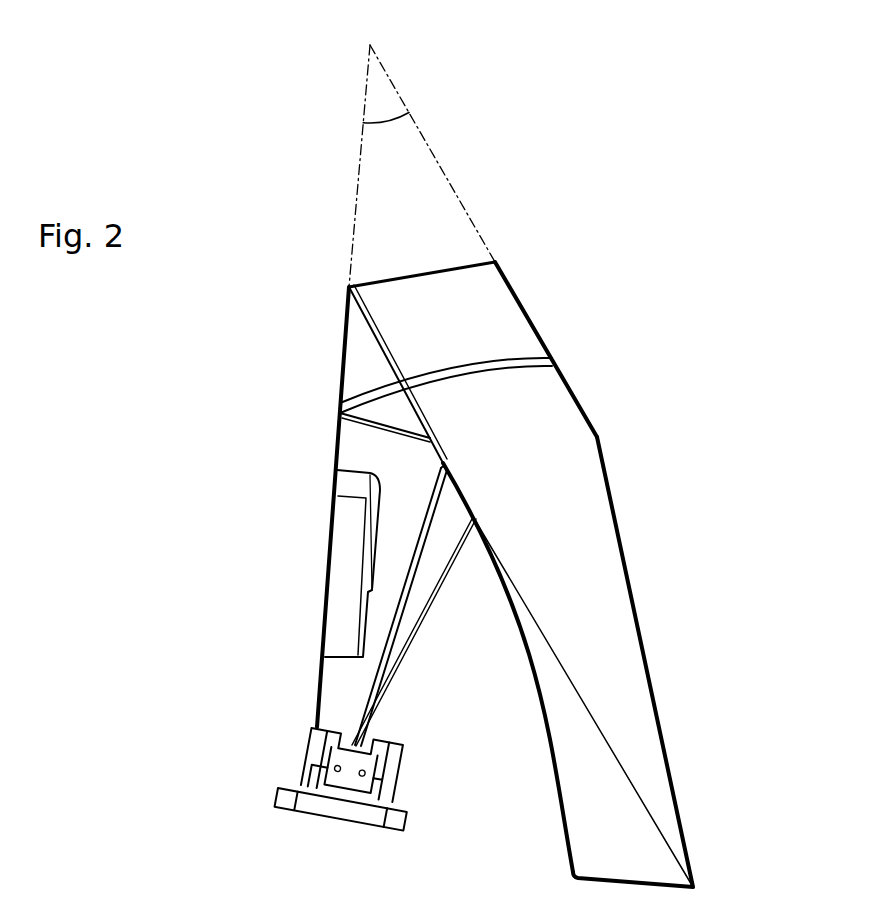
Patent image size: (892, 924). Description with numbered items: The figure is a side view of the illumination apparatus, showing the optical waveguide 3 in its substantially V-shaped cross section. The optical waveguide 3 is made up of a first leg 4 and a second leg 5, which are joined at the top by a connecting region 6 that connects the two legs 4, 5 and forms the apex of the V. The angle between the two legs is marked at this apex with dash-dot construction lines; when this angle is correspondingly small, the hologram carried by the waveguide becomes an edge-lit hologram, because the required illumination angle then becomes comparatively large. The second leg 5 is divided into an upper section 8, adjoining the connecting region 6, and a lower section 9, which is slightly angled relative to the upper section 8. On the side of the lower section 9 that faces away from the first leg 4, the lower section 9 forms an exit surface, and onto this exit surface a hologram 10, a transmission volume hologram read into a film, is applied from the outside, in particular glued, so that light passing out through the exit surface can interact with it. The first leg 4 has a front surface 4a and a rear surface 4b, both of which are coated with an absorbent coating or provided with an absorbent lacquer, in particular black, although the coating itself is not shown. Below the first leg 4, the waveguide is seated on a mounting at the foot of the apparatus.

The optical waveguide 3 is at (235, 667).
The first leg 4 is at (330, 512).
The front surface 4a is at (327, 562).
The rear surface 4b is at (422, 617).
The second leg 5 is at (597, 437).
The connecting region 6 is at (495, 262).
The upper section 8 is at (527, 310).
The lower section 9 is at (550, 743).
The hologram 10 is at (650, 677).